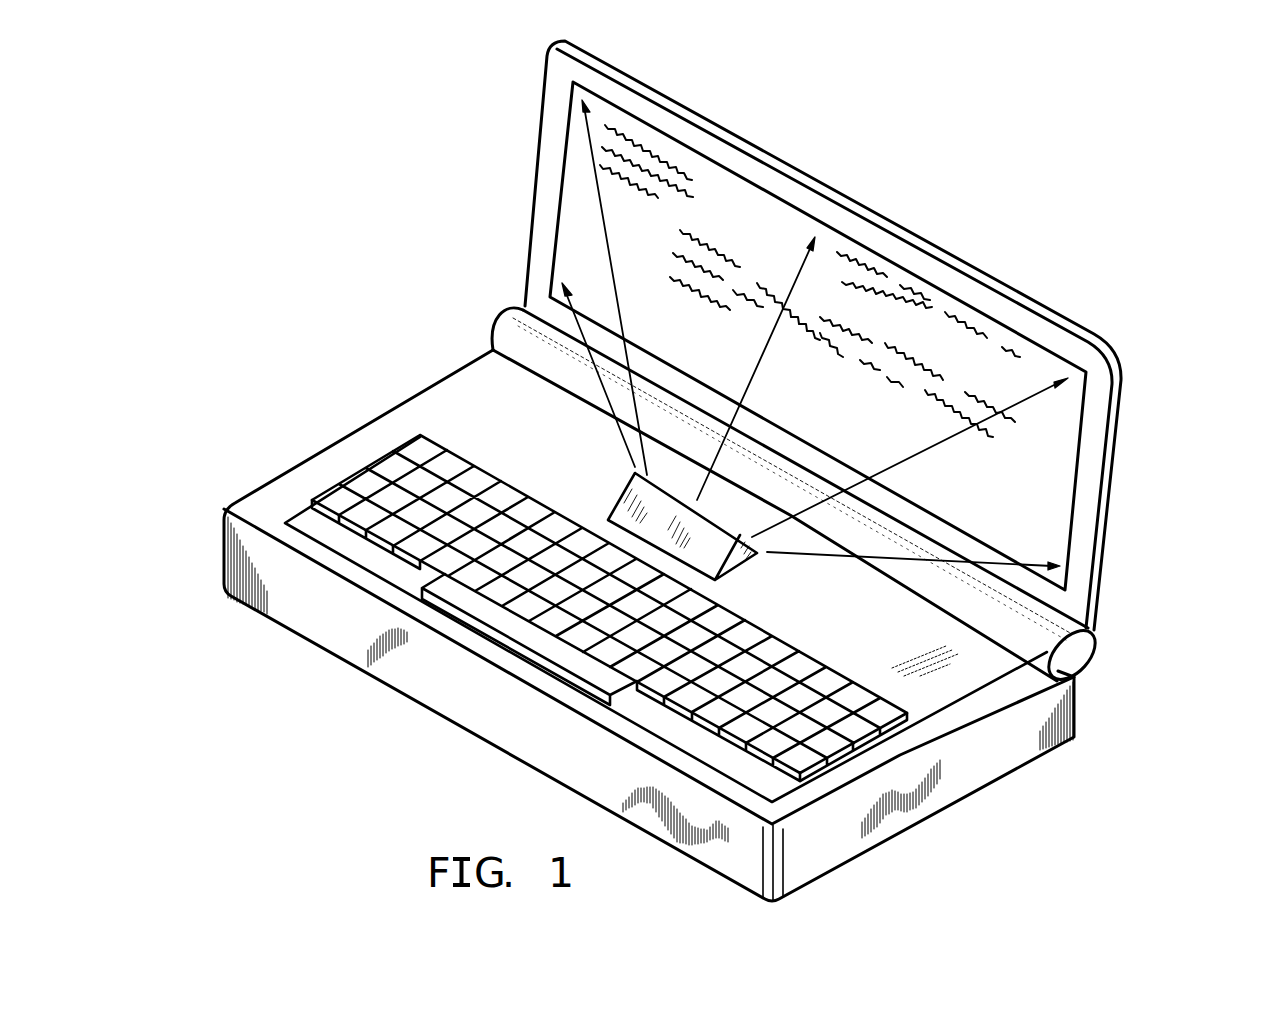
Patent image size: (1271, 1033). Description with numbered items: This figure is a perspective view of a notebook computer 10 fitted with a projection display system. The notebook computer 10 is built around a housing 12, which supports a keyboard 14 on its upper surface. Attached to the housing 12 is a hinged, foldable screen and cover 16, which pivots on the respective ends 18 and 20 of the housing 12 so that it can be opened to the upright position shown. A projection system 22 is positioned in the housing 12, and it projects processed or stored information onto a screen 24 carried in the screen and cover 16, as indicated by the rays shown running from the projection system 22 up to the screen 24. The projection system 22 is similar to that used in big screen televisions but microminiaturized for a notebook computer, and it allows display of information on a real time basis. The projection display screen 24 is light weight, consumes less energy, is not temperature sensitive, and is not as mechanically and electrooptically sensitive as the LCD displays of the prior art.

The notebook computer 10 is at (1138, 206).
The housing 12 is at (237, 553).
The keyboard 14 is at (368, 485).
The hinged, foldable screen and cover 16 is at (1097, 445).
The end of the housing 18 is at (513, 337).
The end of the housing 20 is at (1075, 648).
The projection system 22 is at (628, 503).
The screen 24 is at (1025, 360).